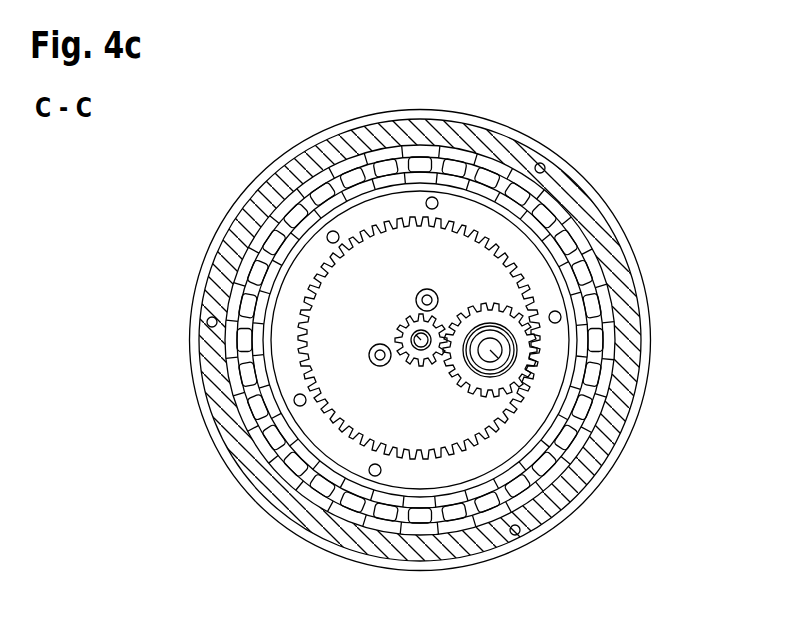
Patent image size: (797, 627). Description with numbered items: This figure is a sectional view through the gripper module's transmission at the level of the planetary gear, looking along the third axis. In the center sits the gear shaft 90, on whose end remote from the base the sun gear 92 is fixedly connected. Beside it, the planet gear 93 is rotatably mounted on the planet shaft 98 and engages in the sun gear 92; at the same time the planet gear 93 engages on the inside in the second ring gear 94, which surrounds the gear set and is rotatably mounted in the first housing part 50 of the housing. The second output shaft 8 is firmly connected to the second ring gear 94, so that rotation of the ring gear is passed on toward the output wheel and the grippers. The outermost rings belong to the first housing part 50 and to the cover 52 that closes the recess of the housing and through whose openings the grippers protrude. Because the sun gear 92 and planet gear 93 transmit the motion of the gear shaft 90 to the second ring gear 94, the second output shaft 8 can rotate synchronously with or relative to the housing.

The second output shaft 8 is at (357, 273).
The first housing part 50 is at (580, 210).
The cover 52 is at (627, 243).
The gear shaft 90 is at (418, 338).
The sun gear 92 is at (403, 338).
The planet gear 93 is at (520, 342).
The second ring gear 94 is at (545, 290).
The planet shaft 98 is at (513, 367).